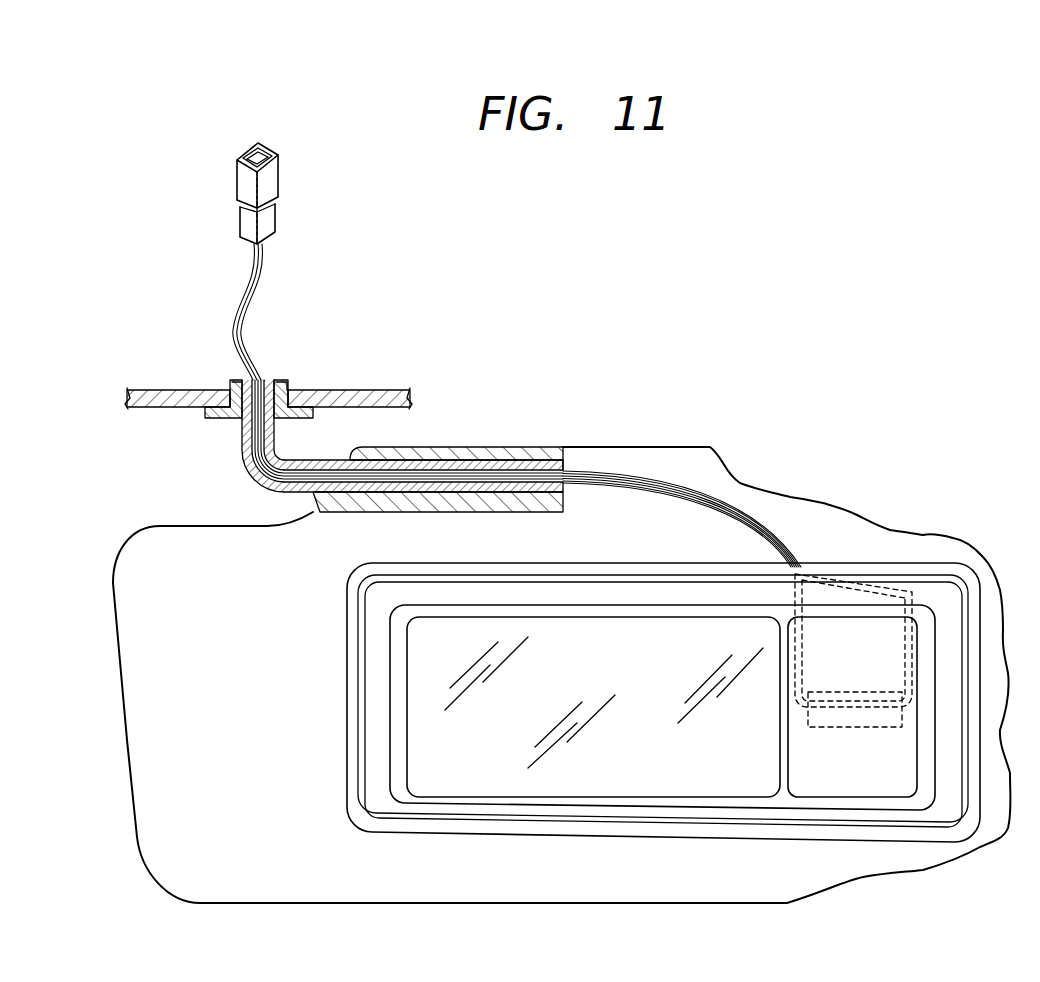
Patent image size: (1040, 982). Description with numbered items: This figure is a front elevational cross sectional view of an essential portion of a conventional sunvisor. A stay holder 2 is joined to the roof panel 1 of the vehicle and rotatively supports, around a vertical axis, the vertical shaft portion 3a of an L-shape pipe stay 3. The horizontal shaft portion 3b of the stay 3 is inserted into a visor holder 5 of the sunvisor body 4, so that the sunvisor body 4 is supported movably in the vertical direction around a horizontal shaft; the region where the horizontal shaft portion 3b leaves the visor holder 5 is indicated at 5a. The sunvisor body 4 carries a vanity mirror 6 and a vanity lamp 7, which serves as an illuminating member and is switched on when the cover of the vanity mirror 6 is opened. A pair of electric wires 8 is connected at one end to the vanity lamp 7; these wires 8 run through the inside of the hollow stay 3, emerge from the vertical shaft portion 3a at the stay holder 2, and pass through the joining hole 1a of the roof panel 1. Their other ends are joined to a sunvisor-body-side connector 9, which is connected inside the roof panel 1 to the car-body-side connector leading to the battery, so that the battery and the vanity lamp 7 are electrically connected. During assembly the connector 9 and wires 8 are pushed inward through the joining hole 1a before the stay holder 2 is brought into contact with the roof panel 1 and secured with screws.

The roof panel 1 is at (348, 397).
The joining hole 1a is at (198, 393).
The stay holder 2 is at (278, 380).
The L-shape pipe stay 3 is at (262, 487).
The vertical shaft portion 3a is at (242, 432).
The horizontal shaft portion 3b is at (463, 458).
The sunvisor body 4 is at (123, 738).
The visor holder 5 is at (522, 447).
The cover opening 5a is at (567, 468).
The vanity mirror 6 is at (490, 780).
The vanity lamp 7 is at (858, 727).
The electric wires 8 is at (893, 600).
The sunvisor-body-side connector 9 is at (278, 195).